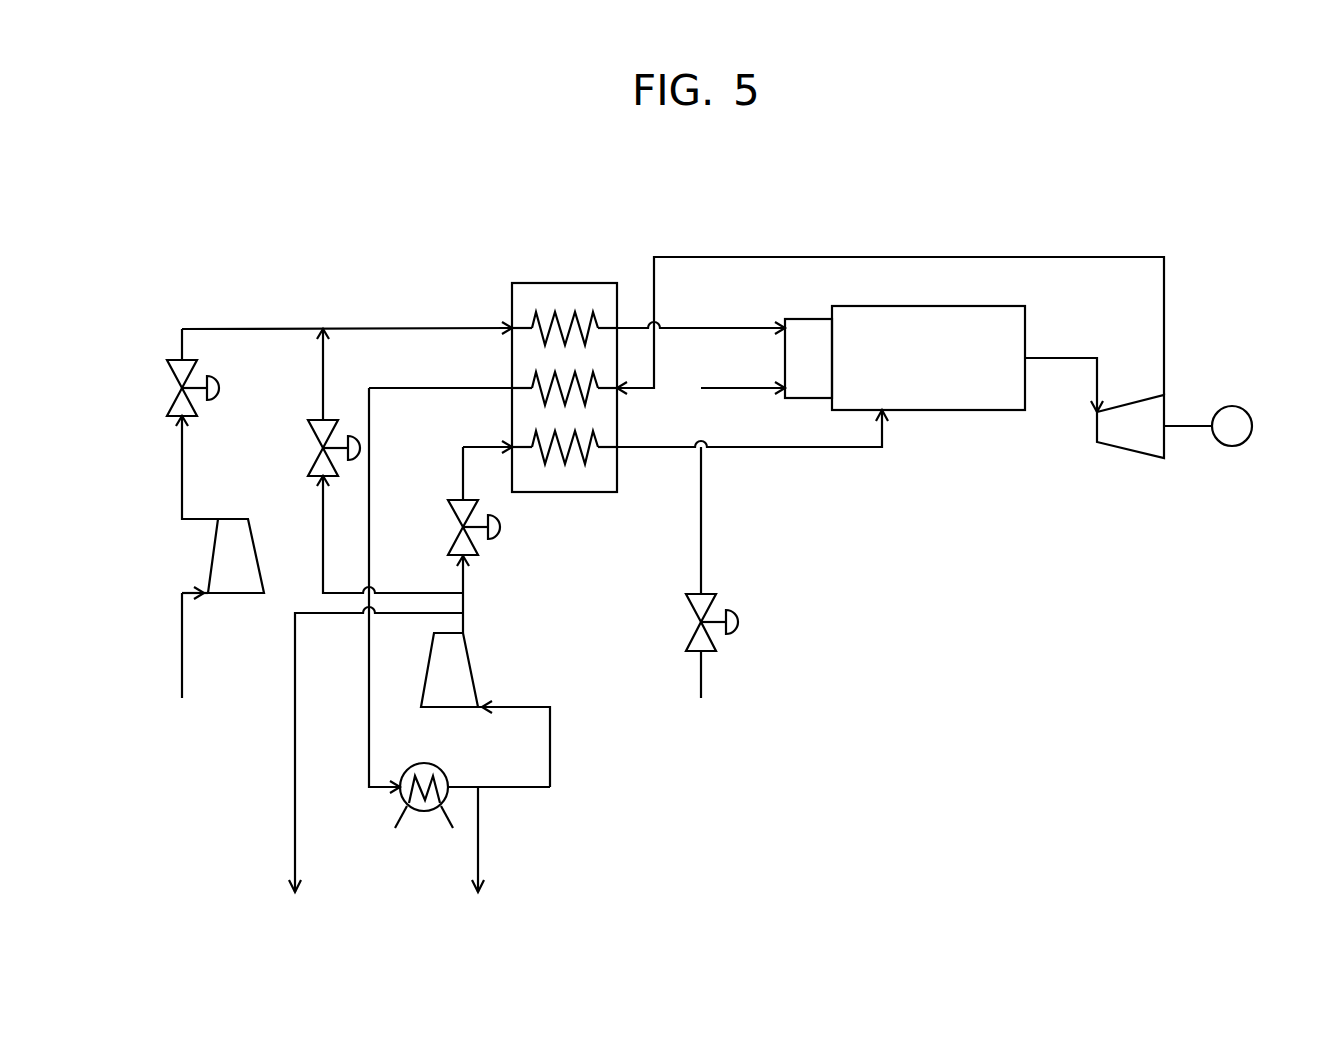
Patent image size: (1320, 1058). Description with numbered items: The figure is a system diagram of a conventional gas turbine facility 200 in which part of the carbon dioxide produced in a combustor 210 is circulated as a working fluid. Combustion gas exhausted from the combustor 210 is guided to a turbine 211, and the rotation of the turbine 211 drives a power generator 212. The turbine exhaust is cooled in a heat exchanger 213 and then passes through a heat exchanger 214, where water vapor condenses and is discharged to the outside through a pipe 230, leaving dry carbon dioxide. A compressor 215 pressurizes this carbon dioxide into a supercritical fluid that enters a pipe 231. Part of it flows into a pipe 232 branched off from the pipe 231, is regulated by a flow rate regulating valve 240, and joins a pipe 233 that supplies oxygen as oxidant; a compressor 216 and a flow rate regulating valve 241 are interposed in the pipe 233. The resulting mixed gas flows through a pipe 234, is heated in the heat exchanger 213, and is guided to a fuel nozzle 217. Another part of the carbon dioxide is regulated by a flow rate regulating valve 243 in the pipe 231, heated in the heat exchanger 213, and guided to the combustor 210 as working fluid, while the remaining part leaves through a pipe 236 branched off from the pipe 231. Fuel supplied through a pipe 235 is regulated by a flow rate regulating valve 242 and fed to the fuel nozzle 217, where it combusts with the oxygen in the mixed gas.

The gas turbine facility 200 is at (508, 200).
The combustor 210 is at (940, 410).
The turbine 211 is at (1128, 452).
The power generator 212 is at (1230, 406).
The heat exchanger 213 is at (568, 283).
The heat exchanger 214 is at (425, 763).
The compressor 215 is at (472, 666).
The compressor 216 is at (210, 557).
The fuel nozzle 217 is at (805, 398).
The pipe 230 is at (478, 831).
The pipe 231 is at (463, 472).
The pipe 232 is at (323, 538).
The pipe 233 is at (182, 468).
The pipe 234 is at (427, 327).
The pipe 235 is at (701, 514).
The pipe 236 is at (295, 640).
The flow rate regulating valve 240 is at (308, 452).
The flow rate regulating valve 241 is at (167, 392).
The flow rate regulating valve 242 is at (686, 627).
The flow rate regulating valve 243 is at (448, 532).